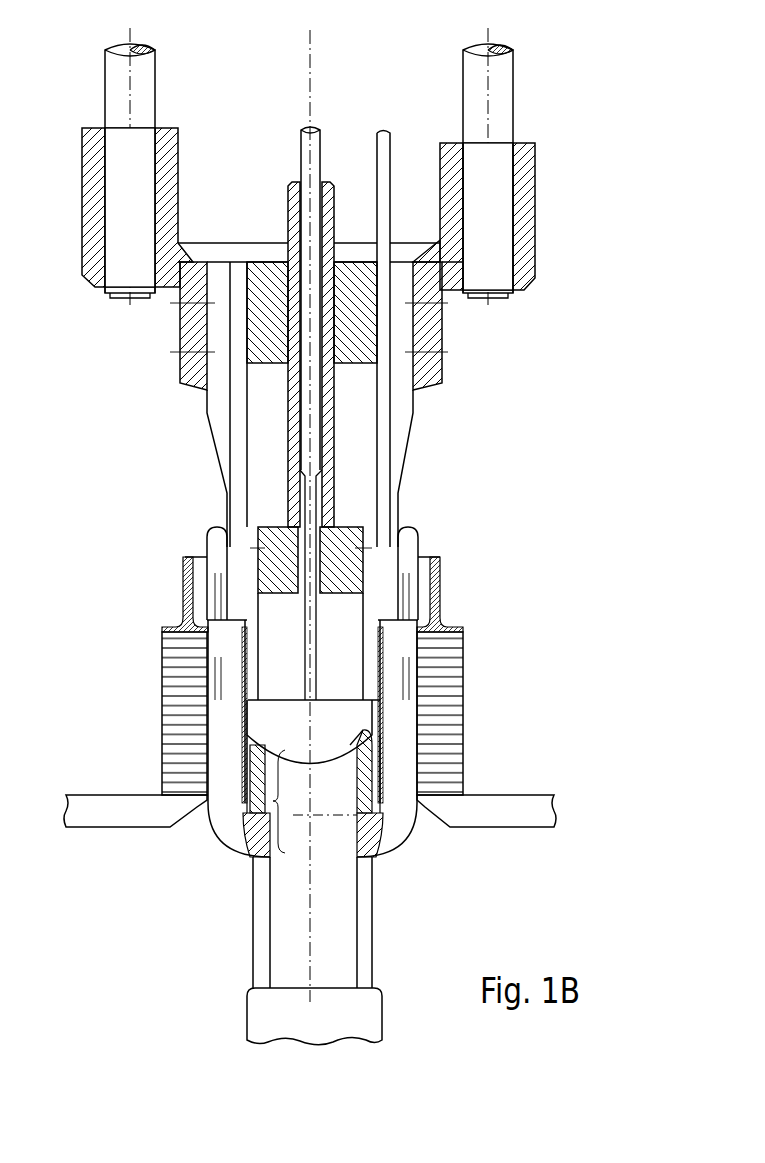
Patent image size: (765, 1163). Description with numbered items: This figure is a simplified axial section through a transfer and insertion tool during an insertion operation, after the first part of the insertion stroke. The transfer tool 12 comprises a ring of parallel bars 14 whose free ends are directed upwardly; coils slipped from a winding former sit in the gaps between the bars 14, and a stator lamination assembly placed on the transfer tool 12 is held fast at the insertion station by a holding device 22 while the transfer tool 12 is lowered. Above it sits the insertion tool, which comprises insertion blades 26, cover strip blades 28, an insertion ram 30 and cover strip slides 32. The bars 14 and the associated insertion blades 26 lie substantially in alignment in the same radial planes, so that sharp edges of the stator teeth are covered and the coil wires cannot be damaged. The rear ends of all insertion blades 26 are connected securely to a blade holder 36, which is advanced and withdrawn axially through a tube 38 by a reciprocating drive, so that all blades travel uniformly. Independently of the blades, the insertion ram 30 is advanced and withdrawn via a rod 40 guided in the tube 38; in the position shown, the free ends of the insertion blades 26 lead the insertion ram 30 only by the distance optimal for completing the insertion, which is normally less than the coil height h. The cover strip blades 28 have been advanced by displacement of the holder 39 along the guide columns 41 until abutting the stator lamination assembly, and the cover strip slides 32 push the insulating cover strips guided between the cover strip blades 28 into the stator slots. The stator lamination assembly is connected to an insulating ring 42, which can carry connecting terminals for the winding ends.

The transfer tool 12 is at (320, 985).
The bars 14 is at (365, 863).
The holding device 22 is at (520, 810).
The insertion blades 26 is at (370, 655).
The cover strip blades 28 is at (400, 447).
The insertion ram 30 is at (342, 722).
The cover strip slides 32 is at (383, 397).
The blade holder 36 is at (342, 528).
The tube 38 is at (335, 182).
The holder 39 is at (525, 190).
The rod 40 is at (311, 127).
The guide columns 41 is at (503, 243).
The insulating ring 42 is at (438, 588).